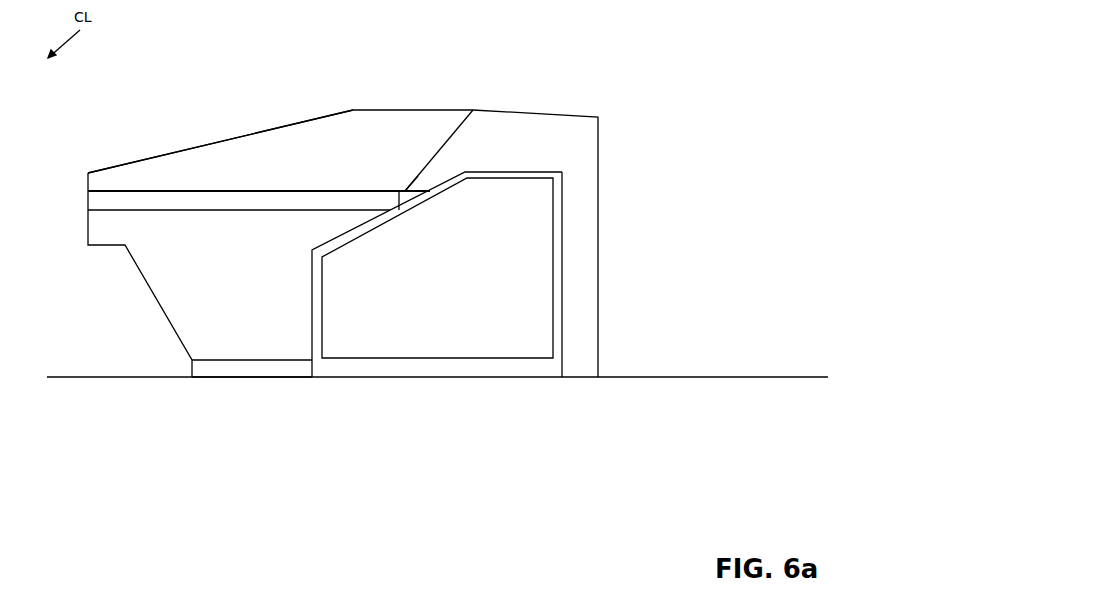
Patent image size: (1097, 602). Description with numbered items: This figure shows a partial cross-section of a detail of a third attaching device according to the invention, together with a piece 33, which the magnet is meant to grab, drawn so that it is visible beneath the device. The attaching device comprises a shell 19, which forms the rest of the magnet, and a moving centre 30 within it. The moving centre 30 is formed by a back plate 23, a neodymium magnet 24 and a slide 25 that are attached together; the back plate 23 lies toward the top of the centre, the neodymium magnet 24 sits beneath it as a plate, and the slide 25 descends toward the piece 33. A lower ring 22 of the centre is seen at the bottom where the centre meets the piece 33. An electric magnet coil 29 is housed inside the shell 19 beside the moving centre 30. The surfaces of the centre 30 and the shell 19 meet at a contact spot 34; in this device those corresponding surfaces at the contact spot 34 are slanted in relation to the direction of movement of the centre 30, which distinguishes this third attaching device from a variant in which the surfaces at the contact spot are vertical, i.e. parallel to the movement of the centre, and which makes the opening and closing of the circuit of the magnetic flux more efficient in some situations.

The shell 19 is at (530, 128).
The lower ring 22 is at (248, 367).
The back plate 23 is at (422, 122).
The neodymium magnet 24 is at (149, 205).
The slide 25 is at (192, 248).
The electric magnet coil 29 is at (530, 255).
The moving centre 30 is at (219, 160).
The piece 33 is at (672, 403).
The contact spot 34 is at (423, 165).